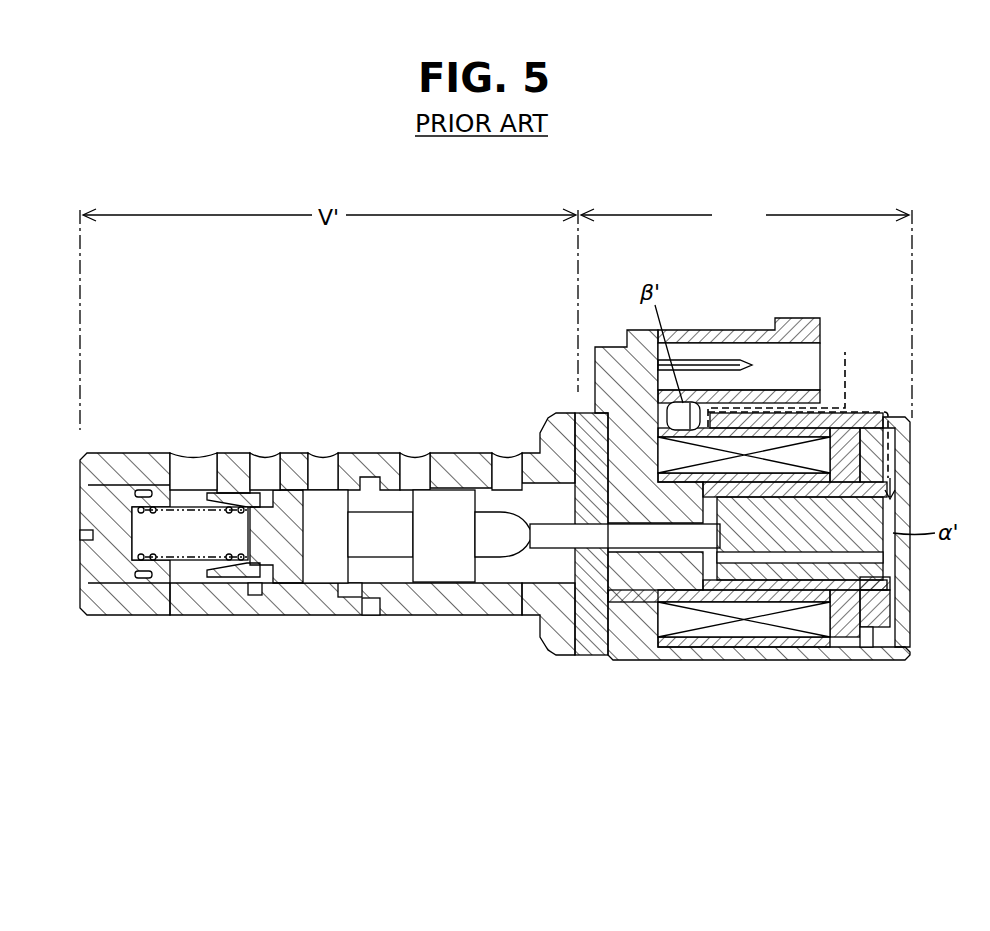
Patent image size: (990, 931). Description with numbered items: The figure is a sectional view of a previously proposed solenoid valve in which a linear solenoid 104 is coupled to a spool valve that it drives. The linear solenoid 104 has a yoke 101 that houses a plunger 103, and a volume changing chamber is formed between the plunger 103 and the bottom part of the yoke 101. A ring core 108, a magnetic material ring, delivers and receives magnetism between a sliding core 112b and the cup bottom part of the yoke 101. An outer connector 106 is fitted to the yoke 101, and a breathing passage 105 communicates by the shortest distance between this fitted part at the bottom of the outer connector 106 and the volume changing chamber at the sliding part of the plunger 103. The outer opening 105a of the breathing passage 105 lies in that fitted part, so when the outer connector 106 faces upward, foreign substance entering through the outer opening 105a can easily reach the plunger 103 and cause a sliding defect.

The yoke 101 is at (667, 657).
The plunger 103 is at (870, 540).
The linear solenoid 104 is at (745, 217).
The breathing passage 105 is at (866, 413).
The outer opening 105a is at (699, 410).
The outer connector 106 is at (844, 316).
The ring core 108 is at (873, 628).
The sliding core 112b is at (880, 590).